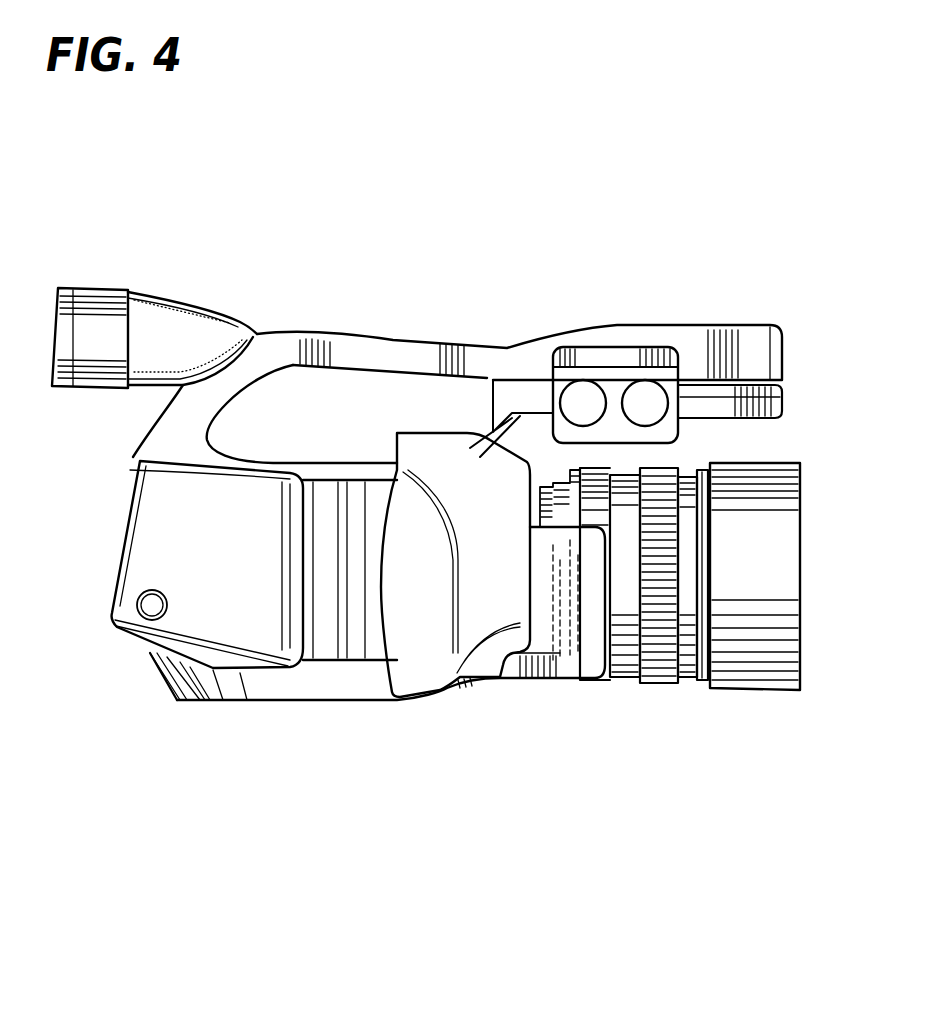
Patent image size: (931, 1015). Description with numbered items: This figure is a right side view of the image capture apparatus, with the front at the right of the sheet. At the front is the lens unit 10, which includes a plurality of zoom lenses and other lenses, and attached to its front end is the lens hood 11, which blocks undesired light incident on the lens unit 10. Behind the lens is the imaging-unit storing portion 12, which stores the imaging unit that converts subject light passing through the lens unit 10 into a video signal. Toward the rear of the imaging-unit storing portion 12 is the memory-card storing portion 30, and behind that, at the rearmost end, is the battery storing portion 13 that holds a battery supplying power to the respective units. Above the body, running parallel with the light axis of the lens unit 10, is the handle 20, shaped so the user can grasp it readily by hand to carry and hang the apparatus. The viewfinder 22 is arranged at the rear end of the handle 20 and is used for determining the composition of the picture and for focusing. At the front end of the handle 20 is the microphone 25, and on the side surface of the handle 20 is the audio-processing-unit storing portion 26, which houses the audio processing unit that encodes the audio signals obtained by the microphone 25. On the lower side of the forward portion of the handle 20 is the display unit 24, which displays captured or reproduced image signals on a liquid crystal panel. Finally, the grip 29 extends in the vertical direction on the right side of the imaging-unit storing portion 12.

The lens unit 10 is at (627, 668).
The lens hood 11 is at (750, 673).
The imaging-unit storing portion 12 is at (360, 652).
The battery storing portion 13 is at (125, 488).
The handle 20 is at (400, 346).
The viewfinder 22 is at (100, 300).
The display unit 24 is at (707, 410).
The microphone 25 is at (787, 345).
The audio-processing-unit storing portion 26 is at (615, 372).
The grip 29 is at (428, 698).
The memory-card storing portion 30 is at (178, 702).